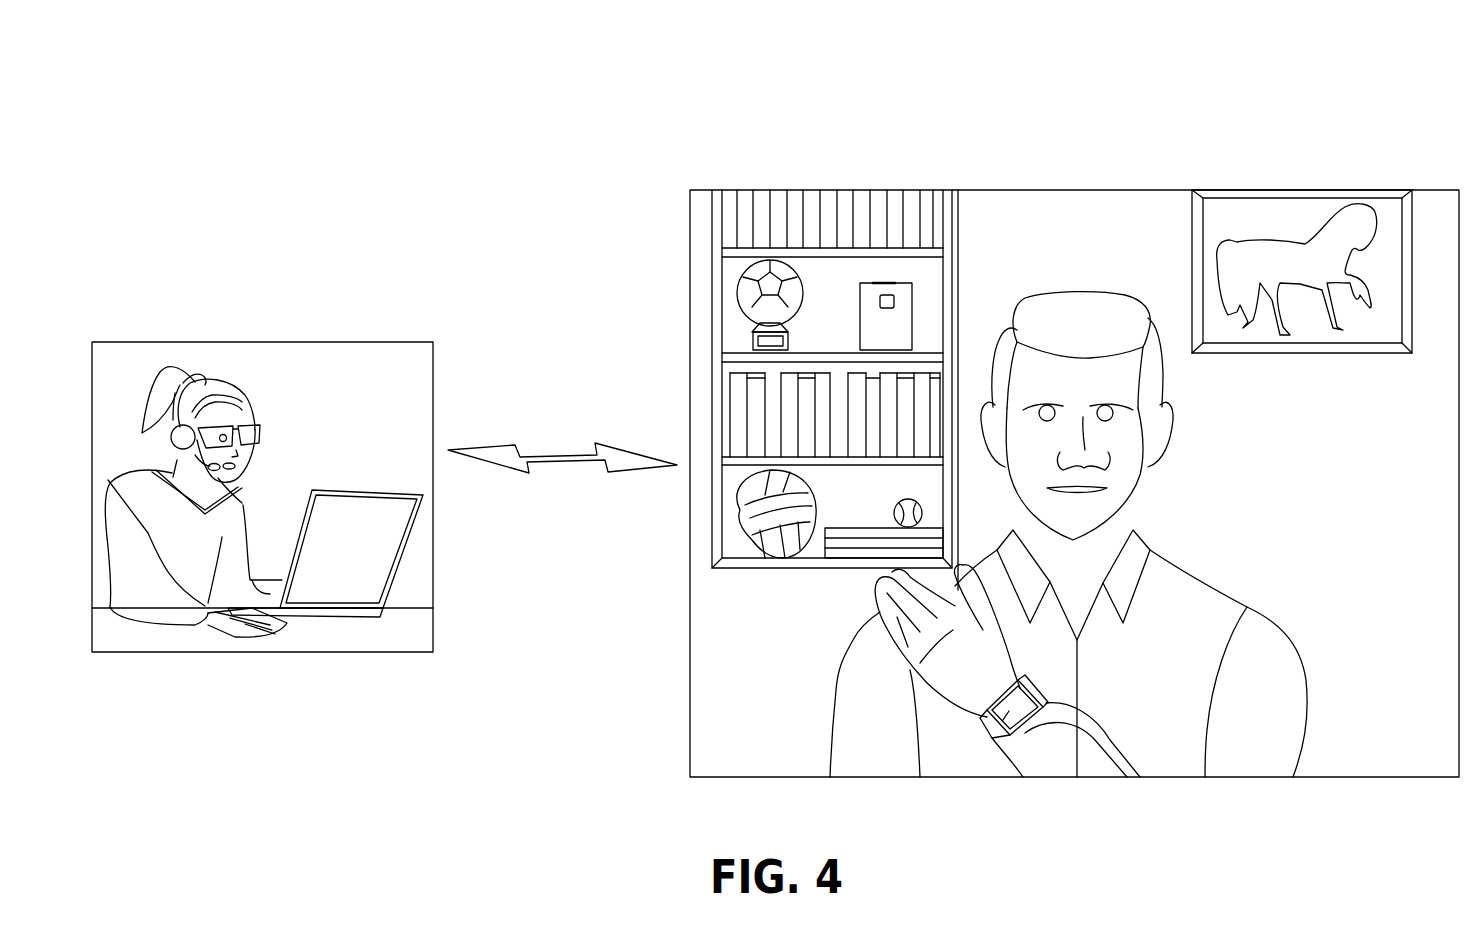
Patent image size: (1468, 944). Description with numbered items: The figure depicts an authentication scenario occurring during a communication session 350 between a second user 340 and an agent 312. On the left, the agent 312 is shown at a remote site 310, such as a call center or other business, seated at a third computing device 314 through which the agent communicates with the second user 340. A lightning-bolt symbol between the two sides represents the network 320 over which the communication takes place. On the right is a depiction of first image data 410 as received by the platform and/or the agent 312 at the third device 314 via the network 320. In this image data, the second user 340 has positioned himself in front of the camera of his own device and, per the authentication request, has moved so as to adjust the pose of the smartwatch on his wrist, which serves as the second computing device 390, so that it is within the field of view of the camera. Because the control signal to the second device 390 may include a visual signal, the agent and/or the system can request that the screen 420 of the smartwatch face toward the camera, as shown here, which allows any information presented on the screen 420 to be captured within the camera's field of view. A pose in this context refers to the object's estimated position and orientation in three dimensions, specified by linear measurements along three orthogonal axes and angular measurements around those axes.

The communication session 350 is at (336, 122).
The remote site 310 is at (262, 341).
The agent 312 is at (266, 416).
The third computing device 314 is at (362, 490).
The network 320 is at (563, 441).
The first image data 410 is at (1024, 189).
The second user 340 is at (1090, 288).
The second computing device 390 is at (1038, 684).
The screen 420 is at (993, 735).